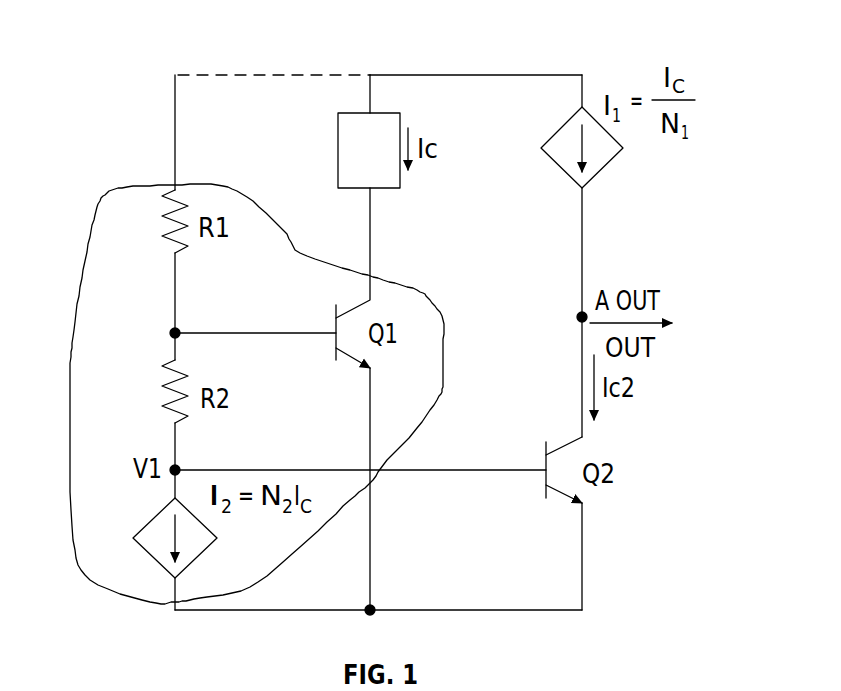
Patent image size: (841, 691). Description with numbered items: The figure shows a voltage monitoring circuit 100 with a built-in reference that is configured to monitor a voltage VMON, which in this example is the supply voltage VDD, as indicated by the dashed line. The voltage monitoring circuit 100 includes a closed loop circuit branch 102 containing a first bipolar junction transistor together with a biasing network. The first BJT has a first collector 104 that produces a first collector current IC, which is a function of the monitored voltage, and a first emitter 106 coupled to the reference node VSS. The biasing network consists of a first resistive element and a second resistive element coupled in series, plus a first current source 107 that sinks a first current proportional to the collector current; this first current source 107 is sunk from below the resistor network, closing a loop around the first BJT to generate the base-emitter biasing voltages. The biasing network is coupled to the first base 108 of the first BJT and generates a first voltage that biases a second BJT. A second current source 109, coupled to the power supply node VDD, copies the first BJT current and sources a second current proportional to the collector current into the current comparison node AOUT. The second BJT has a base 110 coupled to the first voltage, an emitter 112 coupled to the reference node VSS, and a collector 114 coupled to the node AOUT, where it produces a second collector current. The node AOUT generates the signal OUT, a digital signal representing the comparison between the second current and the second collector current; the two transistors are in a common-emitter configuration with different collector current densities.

The voltage monitoring circuit 100 is at (126, 31).
The closed loop circuit branch 102 is at (215, 186).
The first collector 104 is at (368, 296).
The first emitter 106 is at (368, 406).
The first current source 107 is at (153, 518).
The first base 108 is at (232, 333).
The second current source 109 is at (560, 130).
The base 110 is at (450, 470).
The emitter 112 is at (581, 558).
The collector 114 is at (581, 396).